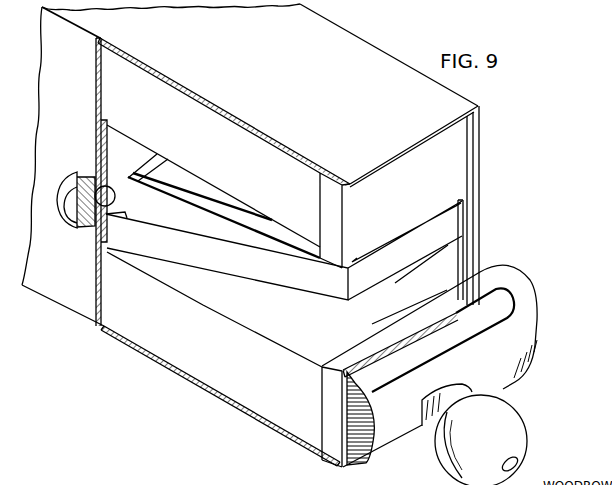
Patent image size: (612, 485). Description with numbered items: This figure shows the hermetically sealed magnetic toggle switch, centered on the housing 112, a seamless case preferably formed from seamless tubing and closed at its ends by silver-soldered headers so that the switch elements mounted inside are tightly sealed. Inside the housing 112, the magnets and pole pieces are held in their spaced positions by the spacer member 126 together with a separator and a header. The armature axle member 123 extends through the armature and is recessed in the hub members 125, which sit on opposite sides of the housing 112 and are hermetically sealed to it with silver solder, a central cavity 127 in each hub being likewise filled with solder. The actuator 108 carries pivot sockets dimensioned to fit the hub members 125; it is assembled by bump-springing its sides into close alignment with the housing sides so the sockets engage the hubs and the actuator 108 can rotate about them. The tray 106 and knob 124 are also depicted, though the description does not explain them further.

The housing 112 is at (344, 46).
The tray 106 is at (265, 260).
The actuator 108 is at (527, 320).
The knob 124 is at (513, 422).
The spacer member 126 is at (458, 240).
The hub members 125 is at (78, 172).
The armature axle member 123 is at (115, 197).
The central cavity 127 is at (72, 210).